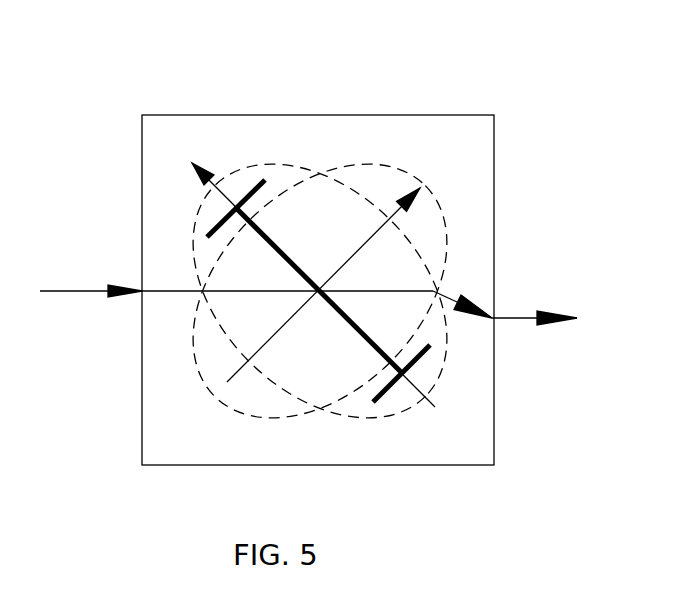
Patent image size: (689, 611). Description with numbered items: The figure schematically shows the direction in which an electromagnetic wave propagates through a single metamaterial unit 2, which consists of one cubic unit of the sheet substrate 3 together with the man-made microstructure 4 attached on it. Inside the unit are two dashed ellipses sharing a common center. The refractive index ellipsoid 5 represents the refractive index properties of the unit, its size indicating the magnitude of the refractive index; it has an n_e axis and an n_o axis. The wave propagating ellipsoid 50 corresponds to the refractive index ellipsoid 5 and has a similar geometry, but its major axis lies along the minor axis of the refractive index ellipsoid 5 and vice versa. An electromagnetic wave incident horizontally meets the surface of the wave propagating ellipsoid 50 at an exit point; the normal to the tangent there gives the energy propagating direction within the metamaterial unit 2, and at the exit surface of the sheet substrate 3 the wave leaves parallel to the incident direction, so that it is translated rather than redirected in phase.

The metamaterial unit 2 is at (308, 287).
The sheet substrate 3 is at (477, 170).
The man-made microstructure 4 is at (218, 222).
The wave propagating ellipsoid 50 is at (348, 165).
The refractive index ellipsoid 5 is at (358, 413).